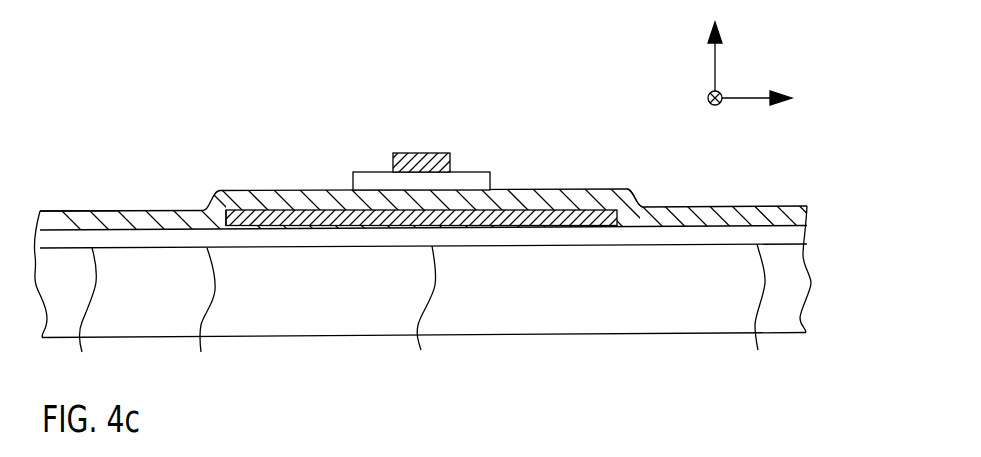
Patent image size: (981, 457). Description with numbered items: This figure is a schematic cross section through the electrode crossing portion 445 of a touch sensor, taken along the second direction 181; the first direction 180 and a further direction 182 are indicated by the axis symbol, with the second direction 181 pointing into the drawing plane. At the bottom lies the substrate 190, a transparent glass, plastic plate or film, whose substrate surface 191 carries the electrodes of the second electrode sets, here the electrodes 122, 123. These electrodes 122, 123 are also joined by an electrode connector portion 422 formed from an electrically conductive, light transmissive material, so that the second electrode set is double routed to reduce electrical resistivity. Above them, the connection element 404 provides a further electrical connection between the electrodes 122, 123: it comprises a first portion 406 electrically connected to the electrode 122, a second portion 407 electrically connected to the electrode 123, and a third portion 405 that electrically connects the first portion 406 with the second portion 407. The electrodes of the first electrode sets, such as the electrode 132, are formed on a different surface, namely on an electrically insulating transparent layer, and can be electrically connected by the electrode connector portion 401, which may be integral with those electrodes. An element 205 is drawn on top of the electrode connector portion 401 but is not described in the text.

The electrode crossing portion 445 is at (259, 78).
The contact element 205 is at (423, 152).
The electrode connector portion 401 is at (472, 171).
The connection element 404 is at (548, 178).
The third portion 405 is at (343, 209).
The first portion 406 is at (243, 209).
The second portion 407 is at (603, 186).
The electrode 132 is at (70, 210).
The substrate 190 is at (145, 337).
The substrate surface 191 is at (68, 297).
The electrode 122 is at (423, 313).
The electrode connector portion 422 is at (423, 314).
The electrode 123 is at (775, 293).
The first direction 180 is at (745, 102).
The second direction 181 is at (708, 98).
The third direction 182 is at (715, 52).